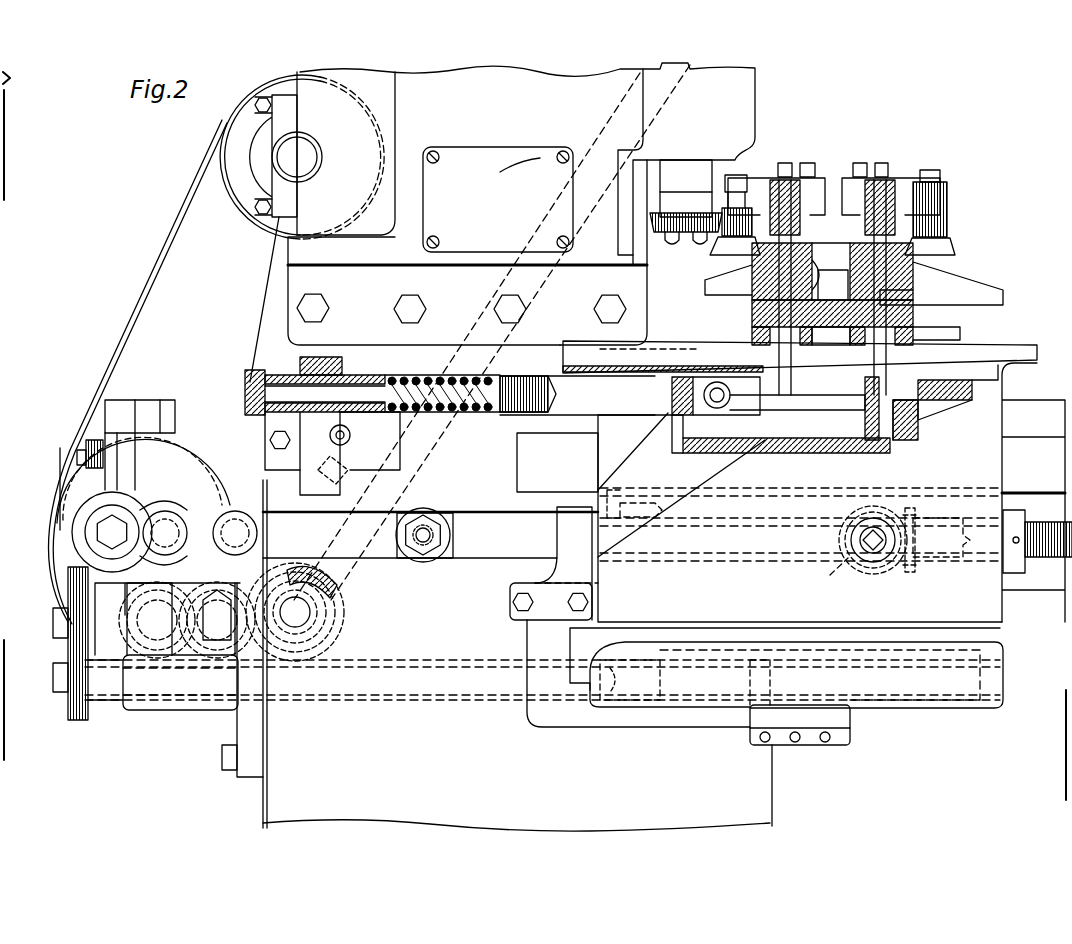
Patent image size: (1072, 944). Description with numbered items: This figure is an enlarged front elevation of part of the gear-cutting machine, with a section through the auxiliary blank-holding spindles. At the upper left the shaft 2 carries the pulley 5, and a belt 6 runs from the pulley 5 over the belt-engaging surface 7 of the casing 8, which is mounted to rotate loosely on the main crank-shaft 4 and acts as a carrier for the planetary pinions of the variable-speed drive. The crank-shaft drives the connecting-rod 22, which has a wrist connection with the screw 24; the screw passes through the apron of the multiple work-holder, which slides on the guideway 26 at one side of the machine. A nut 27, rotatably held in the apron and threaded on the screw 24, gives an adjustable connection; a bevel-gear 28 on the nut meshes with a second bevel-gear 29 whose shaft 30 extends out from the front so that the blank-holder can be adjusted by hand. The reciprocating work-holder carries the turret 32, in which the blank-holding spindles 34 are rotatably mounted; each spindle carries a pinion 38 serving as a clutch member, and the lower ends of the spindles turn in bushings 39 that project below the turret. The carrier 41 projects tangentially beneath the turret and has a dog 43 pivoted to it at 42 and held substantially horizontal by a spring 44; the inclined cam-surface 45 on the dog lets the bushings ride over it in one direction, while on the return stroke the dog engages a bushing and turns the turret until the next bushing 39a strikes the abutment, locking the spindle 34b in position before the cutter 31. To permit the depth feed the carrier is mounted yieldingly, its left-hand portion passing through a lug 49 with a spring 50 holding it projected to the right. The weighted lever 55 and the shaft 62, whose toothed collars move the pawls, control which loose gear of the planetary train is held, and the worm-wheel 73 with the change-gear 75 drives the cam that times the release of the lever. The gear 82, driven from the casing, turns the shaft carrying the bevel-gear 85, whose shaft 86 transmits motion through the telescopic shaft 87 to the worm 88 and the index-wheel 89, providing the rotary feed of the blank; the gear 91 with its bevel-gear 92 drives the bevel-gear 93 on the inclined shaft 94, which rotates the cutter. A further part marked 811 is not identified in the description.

The shaft 2 is at (295, 158).
The main crank-shaft 4 is at (168, 530).
The pulley 5 is at (240, 132).
The belt 6 is at (128, 322).
The belt-engaging surface 7 is at (98, 432).
The casing 8 is at (194, 437).
The connecting-rod 22 is at (375, 543).
The screw 24 is at (492, 553).
The guideway 26 is at (515, 477).
The nut 27 is at (940, 525).
The bevel-gear 28 is at (908, 510).
The second bevel-gear 29 is at (830, 575).
The shaft 30 is at (870, 552).
The cutter 31 is at (672, 240).
The turret 32 is at (1003, 300).
The spindles 34 is at (865, 230).
The spindle 34b is at (740, 190).
The pinions 38 is at (818, 310).
The bushings 39 is at (935, 375).
The bushing 39a is at (800, 355).
The carrier 41 is at (612, 400).
The pivot 42 is at (716, 400).
The dog 43 is at (803, 410).
The spring 44 is at (850, 410).
The cam-surface 45 is at (833, 390).
The lug 49 is at (308, 360).
The spring 50 is at (400, 379).
The weighted lever 55 is at (72, 493).
The shaft 62 is at (180, 682).
The worm-wheel 73 is at (167, 410).
The change-gear 75 is at (80, 450).
The gear 82 is at (222, 650).
The bevel-gear 85 is at (178, 660).
The shaft 86 is at (115, 665).
The telescopic shaft 87 is at (440, 688).
The worm 88 is at (773, 657).
The index-wheel 89 is at (885, 685).
The gear 91 is at (332, 625).
The bevel-gear 92 is at (332, 650).
The bevel-gear 93 is at (345, 586).
The inclined shaft 94 is at (350, 456).
The bolt 811 is at (290, 443).